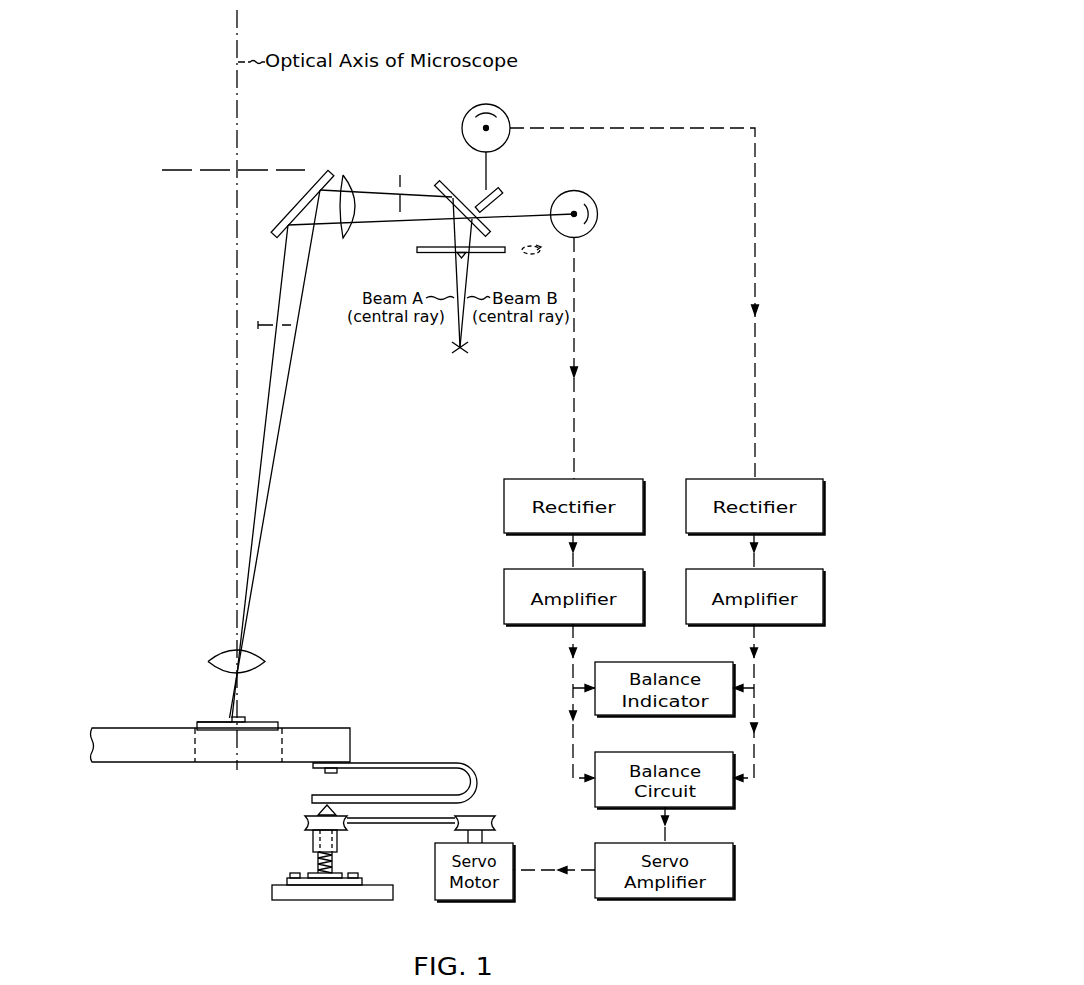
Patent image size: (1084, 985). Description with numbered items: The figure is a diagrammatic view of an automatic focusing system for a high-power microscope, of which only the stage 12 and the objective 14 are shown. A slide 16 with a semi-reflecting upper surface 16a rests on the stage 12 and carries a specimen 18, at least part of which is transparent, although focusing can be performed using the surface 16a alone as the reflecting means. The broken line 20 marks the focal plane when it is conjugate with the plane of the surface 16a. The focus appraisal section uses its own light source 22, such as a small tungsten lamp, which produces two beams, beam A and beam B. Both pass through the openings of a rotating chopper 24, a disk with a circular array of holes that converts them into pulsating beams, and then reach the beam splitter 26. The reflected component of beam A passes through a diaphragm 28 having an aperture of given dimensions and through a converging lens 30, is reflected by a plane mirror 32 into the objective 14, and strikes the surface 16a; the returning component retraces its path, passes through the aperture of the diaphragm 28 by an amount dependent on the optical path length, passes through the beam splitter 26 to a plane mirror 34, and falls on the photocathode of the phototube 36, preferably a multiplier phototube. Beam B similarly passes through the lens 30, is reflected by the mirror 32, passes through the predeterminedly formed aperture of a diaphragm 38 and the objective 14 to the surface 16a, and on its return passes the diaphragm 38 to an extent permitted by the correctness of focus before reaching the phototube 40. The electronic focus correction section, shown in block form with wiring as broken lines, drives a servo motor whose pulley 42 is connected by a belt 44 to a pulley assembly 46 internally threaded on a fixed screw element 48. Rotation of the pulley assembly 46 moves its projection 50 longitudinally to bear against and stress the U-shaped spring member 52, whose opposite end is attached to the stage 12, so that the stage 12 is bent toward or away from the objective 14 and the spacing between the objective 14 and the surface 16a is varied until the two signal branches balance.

The stage 12 is at (142, 755).
The objective 14 is at (255, 651).
The slide 16 is at (283, 722).
The semi-reflecting upper surface 16a is at (208, 722).
The specimen 18 is at (241, 717).
The focal plane 20 is at (180, 170).
The light source 22 is at (470, 349).
The rotating chopper 24 is at (425, 254).
The beam splitter 26 is at (452, 183).
The diaphragm 28 is at (400, 176).
The converging lens 30 is at (344, 176).
The plane mirror 32 is at (278, 239).
The plane mirror 34 is at (494, 193).
The phototube 36 is at (506, 111).
The diaphragm 38 is at (258, 327).
The phototube 40 is at (592, 197).
The servo motor pulley 42 is at (487, 815).
The belt 44 is at (402, 823).
The pulley assembly 46 is at (305, 823).
The fixed screw element 48 is at (318, 860).
The projection 50 is at (317, 811).
The U-shaped spring member 52 is at (342, 797).